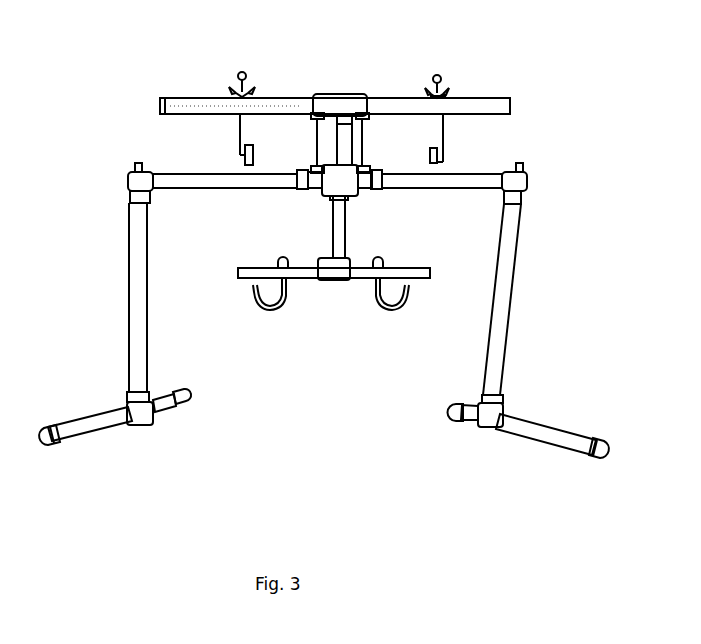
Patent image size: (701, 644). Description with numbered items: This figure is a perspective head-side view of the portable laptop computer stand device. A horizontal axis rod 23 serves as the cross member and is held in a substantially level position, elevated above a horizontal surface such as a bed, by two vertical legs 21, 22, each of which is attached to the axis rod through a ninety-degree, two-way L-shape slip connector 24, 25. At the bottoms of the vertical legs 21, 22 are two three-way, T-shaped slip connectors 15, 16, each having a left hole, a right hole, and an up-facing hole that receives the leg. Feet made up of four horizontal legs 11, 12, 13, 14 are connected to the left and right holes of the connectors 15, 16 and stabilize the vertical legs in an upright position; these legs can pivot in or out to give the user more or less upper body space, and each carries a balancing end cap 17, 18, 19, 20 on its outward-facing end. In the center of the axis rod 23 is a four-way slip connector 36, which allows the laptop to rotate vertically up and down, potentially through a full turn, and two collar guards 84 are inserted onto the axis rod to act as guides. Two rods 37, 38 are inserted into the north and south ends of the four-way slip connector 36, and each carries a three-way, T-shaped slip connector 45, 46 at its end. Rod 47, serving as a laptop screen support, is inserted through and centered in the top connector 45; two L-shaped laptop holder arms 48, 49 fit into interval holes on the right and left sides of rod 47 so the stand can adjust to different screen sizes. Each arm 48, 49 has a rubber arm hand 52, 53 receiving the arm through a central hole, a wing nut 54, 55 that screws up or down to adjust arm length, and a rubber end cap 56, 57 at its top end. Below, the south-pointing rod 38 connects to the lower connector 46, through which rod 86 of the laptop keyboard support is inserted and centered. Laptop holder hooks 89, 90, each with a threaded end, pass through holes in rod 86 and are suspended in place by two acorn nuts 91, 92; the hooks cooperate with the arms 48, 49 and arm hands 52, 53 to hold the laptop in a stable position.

The horizontal leg 11 is at (96, 417).
The horizontal leg 12 is at (535, 433).
The horizontal leg 13 is at (155, 397).
The horizontal leg 14 is at (470, 407).
The three-way T-shaped slip connector 15 is at (148, 425).
The three-way T-shaped slip connector 16 is at (470, 425).
The balancing end cap 17 is at (40, 450).
The balancing end cap 18 is at (187, 402).
The balancing end cap 19 is at (450, 412).
The balancing end cap 20 is at (601, 460).
The vertical leg 21 is at (133, 273).
The vertical leg 22 is at (505, 275).
The horizontal axis rod 23 is at (215, 184).
The two-way L-shape slip connector 24 is at (522, 185).
The two-way L-shape slip connector 25 is at (128, 182).
The four-way slip connector 36 is at (342, 195).
The rod 37 is at (345, 142).
The rod 38 is at (332, 225).
The three-way T-shaped slip connector 45 is at (340, 94).
The three-way T-shaped slip connector 46 is at (331, 280).
The rod 47 is at (187, 105).
The L-shaped laptop holder arm 48 is at (445, 134).
The L-shaped laptop holder arm 49 is at (237, 133).
The rubber arm hand 52 is at (432, 168).
The rubber arm hand 53 is at (243, 160).
The wing nut 54 is at (445, 93).
The wing nut 55 is at (235, 96).
The rubber end cap 56 is at (440, 78).
The rubber end cap 57 is at (240, 70).
The collar guard 84 is at (300, 182).
The rod 86 is at (430, 275).
The laptop holder hook 89 is at (262, 312).
The laptop holder hook 90 is at (386, 313).
The acorn nut 91 is at (277, 263).
The acorn nut 92 is at (384, 263).